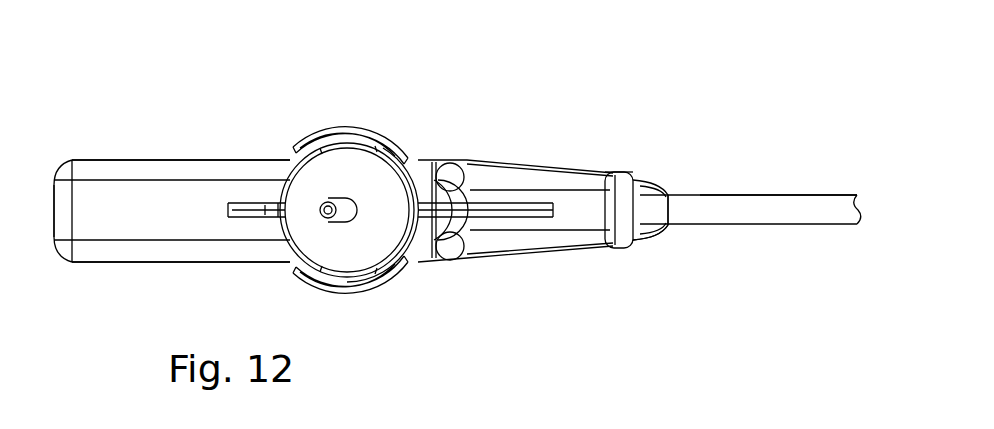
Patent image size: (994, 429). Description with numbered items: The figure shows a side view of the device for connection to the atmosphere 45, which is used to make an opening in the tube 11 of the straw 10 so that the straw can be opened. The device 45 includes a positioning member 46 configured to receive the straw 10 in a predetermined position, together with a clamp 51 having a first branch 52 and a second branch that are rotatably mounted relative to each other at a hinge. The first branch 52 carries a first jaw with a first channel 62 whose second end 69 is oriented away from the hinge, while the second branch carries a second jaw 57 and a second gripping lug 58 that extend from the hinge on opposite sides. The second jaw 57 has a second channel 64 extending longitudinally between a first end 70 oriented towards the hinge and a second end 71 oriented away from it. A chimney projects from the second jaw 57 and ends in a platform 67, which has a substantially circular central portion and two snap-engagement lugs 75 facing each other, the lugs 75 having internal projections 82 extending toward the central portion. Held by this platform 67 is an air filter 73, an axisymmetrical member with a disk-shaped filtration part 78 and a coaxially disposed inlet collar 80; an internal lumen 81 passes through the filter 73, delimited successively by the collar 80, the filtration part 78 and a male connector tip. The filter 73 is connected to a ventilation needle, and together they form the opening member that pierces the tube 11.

The straw 10 is at (802, 247).
The tube 11 is at (733, 226).
The device for connection to the atmosphere 45 is at (118, 298).
The positioning member 46 is at (647, 252).
The clamp 51 is at (153, 280).
The first branch 52 is at (462, 262).
The second jaw 57 is at (510, 160).
The second gripping lug 58 is at (148, 195).
The first channel 62 is at (656, 186).
The second channel 64 is at (578, 158).
The platform 67 is at (394, 268).
The second end 69 is at (680, 176).
The first end 70 is at (476, 183).
The second end 71 is at (627, 160).
The air filter 73 is at (385, 172).
The snap-engagement lugs 75 is at (383, 150).
The filtration part 78 is at (407, 261).
The inlet collar 80 is at (334, 203).
The internal lumen 81 is at (324, 204).
The internal projections 82 is at (283, 262).